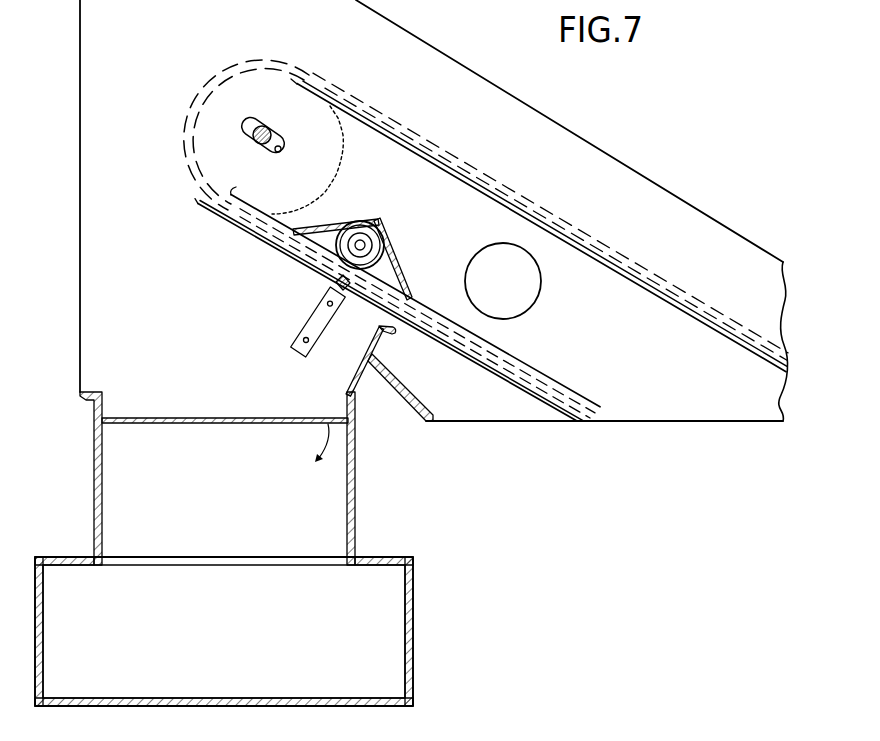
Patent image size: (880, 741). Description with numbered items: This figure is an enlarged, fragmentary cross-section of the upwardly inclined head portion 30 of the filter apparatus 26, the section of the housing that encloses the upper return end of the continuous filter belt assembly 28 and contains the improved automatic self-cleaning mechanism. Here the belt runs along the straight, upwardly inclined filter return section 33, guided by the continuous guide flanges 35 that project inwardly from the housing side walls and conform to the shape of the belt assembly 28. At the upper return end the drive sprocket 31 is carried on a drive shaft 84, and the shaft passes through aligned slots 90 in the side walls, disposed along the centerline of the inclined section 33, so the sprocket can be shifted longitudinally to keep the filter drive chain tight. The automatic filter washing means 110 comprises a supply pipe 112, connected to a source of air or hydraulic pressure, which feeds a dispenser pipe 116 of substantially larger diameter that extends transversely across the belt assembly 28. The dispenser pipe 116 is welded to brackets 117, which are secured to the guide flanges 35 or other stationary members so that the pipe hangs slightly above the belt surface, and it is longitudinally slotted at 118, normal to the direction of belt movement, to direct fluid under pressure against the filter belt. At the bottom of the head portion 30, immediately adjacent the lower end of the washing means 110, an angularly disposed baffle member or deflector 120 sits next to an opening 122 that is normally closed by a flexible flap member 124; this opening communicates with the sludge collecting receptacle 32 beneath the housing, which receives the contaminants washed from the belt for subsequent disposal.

The filter apparatus 26 is at (757, 243).
The continuous filter belt assembly 28 is at (596, 236).
The head portion 30 is at (456, 61).
The drive sprocket 31 is at (344, 150).
The receptacle 32 is at (388, 560).
The filter return section 33 is at (660, 279).
The guide flanges 35 is at (622, 273).
The drive shaft 84 is at (266, 128).
The slots 90 is at (281, 152).
The automatic filter washing means 110 is at (351, 273).
The pipe 112 is at (361, 221).
The dispenser pipe 116 is at (385, 262).
The brackets 117 is at (410, 296).
The slot 118 is at (336, 285).
The baffle member or deflector 120 is at (347, 392).
The opening 122 is at (191, 402).
The flexible flap member 124 is at (224, 424).